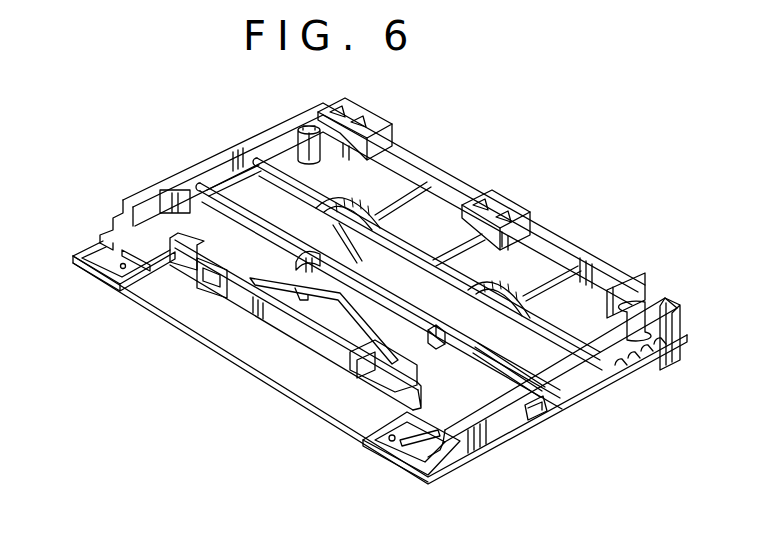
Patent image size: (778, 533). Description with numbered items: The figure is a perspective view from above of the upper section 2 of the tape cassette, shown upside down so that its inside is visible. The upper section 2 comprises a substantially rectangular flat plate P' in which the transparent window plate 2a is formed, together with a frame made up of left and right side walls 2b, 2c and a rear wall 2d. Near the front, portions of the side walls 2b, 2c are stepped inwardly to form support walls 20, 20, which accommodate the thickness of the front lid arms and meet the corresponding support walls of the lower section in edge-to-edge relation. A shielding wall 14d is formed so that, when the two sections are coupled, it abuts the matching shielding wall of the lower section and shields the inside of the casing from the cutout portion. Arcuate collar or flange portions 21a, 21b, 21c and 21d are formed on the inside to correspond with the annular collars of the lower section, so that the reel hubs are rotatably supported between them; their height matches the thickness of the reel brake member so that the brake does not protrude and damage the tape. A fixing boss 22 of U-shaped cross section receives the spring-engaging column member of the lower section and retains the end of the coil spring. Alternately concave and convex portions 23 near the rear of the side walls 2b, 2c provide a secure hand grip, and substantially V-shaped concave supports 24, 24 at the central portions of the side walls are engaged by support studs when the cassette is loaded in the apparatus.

The upper section 2 is at (216, 118).
The transparent window plate 2a is at (555, 405).
The left side wall 2b is at (568, 412).
The right side wall 2c is at (278, 148).
The rear wall 2d is at (438, 214).
The flat plate P' is at (499, 197).
The collar portion 21a is at (293, 260).
The collar portion 21b is at (360, 205).
The collar portion 21c is at (433, 340).
The collar portion 21d is at (533, 223).
The shielding wall 14d is at (250, 300).
The fixing boss 22 is at (320, 327).
The alternately concave and convex portions 23 is at (658, 357).
The concave support 24 is at (530, 418).
The support wall 20 is at (100, 237).